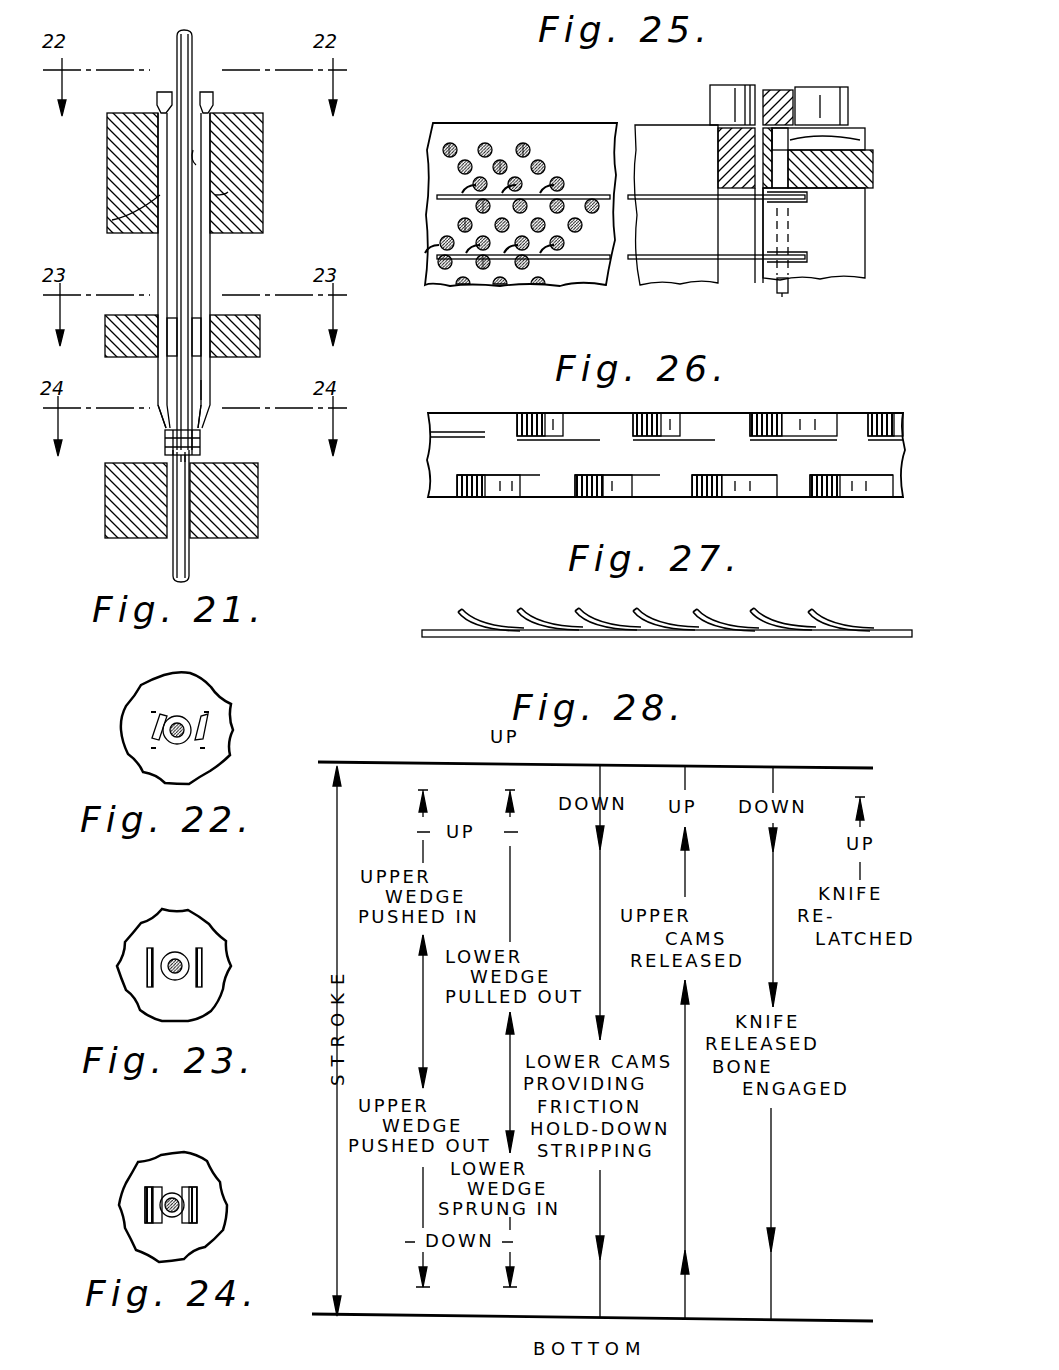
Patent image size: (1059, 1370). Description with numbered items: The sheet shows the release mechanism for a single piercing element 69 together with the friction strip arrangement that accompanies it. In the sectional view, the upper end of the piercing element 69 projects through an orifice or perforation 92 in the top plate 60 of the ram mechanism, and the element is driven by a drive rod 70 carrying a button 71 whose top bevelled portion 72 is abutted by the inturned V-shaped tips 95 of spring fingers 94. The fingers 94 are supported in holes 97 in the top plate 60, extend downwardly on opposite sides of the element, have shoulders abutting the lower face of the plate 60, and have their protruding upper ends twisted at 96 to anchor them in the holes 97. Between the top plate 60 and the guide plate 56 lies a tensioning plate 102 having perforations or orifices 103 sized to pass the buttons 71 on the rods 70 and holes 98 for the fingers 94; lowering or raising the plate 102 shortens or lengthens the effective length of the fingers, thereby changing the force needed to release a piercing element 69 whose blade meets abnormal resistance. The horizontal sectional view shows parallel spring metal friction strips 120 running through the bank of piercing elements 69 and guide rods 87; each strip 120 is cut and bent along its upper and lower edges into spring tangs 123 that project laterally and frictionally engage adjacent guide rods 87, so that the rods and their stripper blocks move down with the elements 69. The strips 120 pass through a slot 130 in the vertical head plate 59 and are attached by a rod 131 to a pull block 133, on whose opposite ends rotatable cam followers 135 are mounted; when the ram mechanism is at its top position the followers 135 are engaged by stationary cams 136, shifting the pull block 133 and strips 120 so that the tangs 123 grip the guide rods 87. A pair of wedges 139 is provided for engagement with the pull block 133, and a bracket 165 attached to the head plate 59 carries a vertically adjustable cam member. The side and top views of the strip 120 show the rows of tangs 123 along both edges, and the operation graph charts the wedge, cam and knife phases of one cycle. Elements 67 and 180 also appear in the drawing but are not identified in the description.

In FIG. 21, the guide plate 56 is at (110, 515).
In FIG. 24, the guide plate 56 is at (202, 1165).
In FIG. 25, the vertical head plate 59 is at (720, 135).
In FIG. 21, the top plate 60 is at (115, 170).
In FIG. 22, the top plate 60 is at (137, 757).
In FIG. 25, the perforated plate 67 is at (628, 135).
In FIG. 21, the piercing element 69 is at (162, 562).
In FIG. 21, the drive rod 70 is at (190, 38).
In FIG. 22, the drive rod 70 is at (177, 722).
In FIG. 23, the drive rod 70 is at (175, 958).
In FIG. 24, the drive rod 70 is at (172, 1195).
In FIG. 25, the drive rod 70 is at (523, 150).
In FIG. 21, the button 71 is at (166, 442).
In FIG. 21, the top bevelled portion 72 is at (200, 452).
In FIG. 25, the guide rod 87 is at (485, 143).
In FIG. 21, the orifice 92 is at (200, 165).
In FIG. 22, the orifice 92 is at (190, 745).
In FIG. 21, the spring finger 94 is at (160, 264).
In FIG. 23, the spring finger 94 is at (150, 966).
In FIG. 21, the inturned V-shaped tip 95 is at (164, 416).
In FIG. 24, the inturned V-shaped tip 95 is at (145, 1208).
In FIG. 21, the twisted upper end 96 is at (160, 100).
In FIG. 22, the twisted upper end 96 is at (155, 728).
In FIG. 21, the hole 97 is at (112, 220).
In FIG. 21, the hole 98 is at (168, 348).
In FIG. 21, the tensioning plate 102 is at (245, 330).
In FIG. 23, the tensioning plate 102 is at (150, 928).
In FIG. 21, the perforation 103 is at (209, 385).
In FIG. 25, the friction strip 120 is at (640, 197).
In FIG. 26, the friction strip 120 is at (440, 453).
In FIG. 27, the friction strip 120 is at (770, 638).
In FIG. 25, the spring tang 123 is at (585, 168).
In FIG. 26, the spring tang 123 is at (870, 413).
In FIG. 27, the spring tang 123 is at (585, 605).
In FIG. 25, the slot 130 is at (752, 205).
In FIG. 25, the rod 131 is at (788, 288).
In FIG. 25, the pull block 133 is at (865, 240).
In FIG. 25, the cam follower 135 is at (846, 97).
In FIG. 25, the stationary cam 136 is at (780, 92).
In FIG. 25, the wedge 139 is at (865, 136).
In FIG. 25, the bracket 165 is at (866, 173).
In FIG. 25, the guide block 180 is at (715, 95).